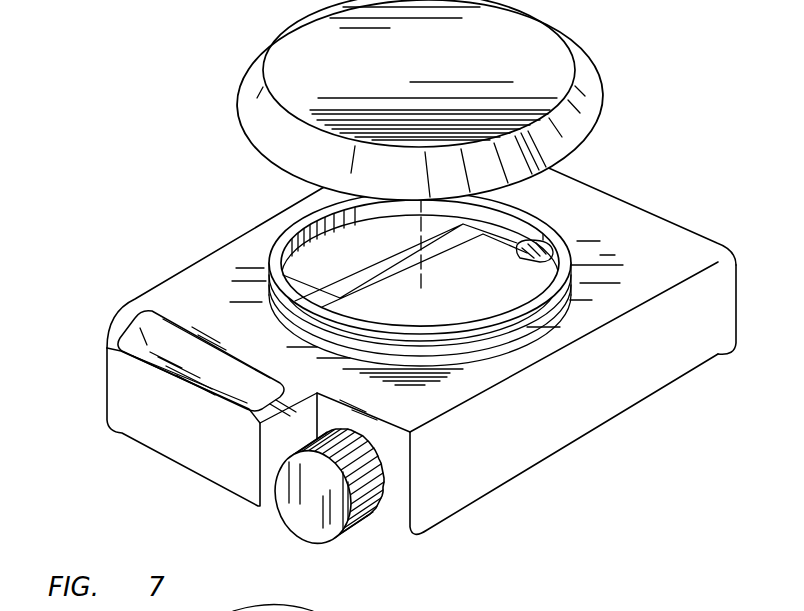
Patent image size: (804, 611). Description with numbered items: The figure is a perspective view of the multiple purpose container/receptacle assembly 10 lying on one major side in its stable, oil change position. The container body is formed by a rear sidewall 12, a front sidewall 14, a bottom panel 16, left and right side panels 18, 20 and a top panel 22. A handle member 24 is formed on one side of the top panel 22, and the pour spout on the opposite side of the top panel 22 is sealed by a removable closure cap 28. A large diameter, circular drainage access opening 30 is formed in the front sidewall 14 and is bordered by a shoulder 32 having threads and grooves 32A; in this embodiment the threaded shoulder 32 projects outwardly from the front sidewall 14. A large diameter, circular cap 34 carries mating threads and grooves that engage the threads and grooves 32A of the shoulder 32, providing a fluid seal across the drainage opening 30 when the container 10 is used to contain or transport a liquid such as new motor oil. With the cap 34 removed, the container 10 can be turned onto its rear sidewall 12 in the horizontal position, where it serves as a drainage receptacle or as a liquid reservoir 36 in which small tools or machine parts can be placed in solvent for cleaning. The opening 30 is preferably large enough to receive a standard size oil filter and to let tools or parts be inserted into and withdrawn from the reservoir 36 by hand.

The multiple purpose container/receptacle assembly 10 is at (380, 287).
The rear sidewall 12 is at (380, 326).
The front sidewall 14 is at (621, 282).
The bottom panel 16 is at (694, 232).
The left side panel 18 is at (566, 417).
The right side panel 20 is at (341, 258).
The top panel 22 is at (227, 380).
The handle member 24 is at (123, 403).
The removable closure cap 28 is at (362, 526).
The circular drainage access opening 30 is at (553, 251).
The shoulder 32 is at (417, 274).
The threads and grooves 32A is at (520, 337).
The circular cap 34 is at (590, 53).
The reservoir 36 is at (467, 294).